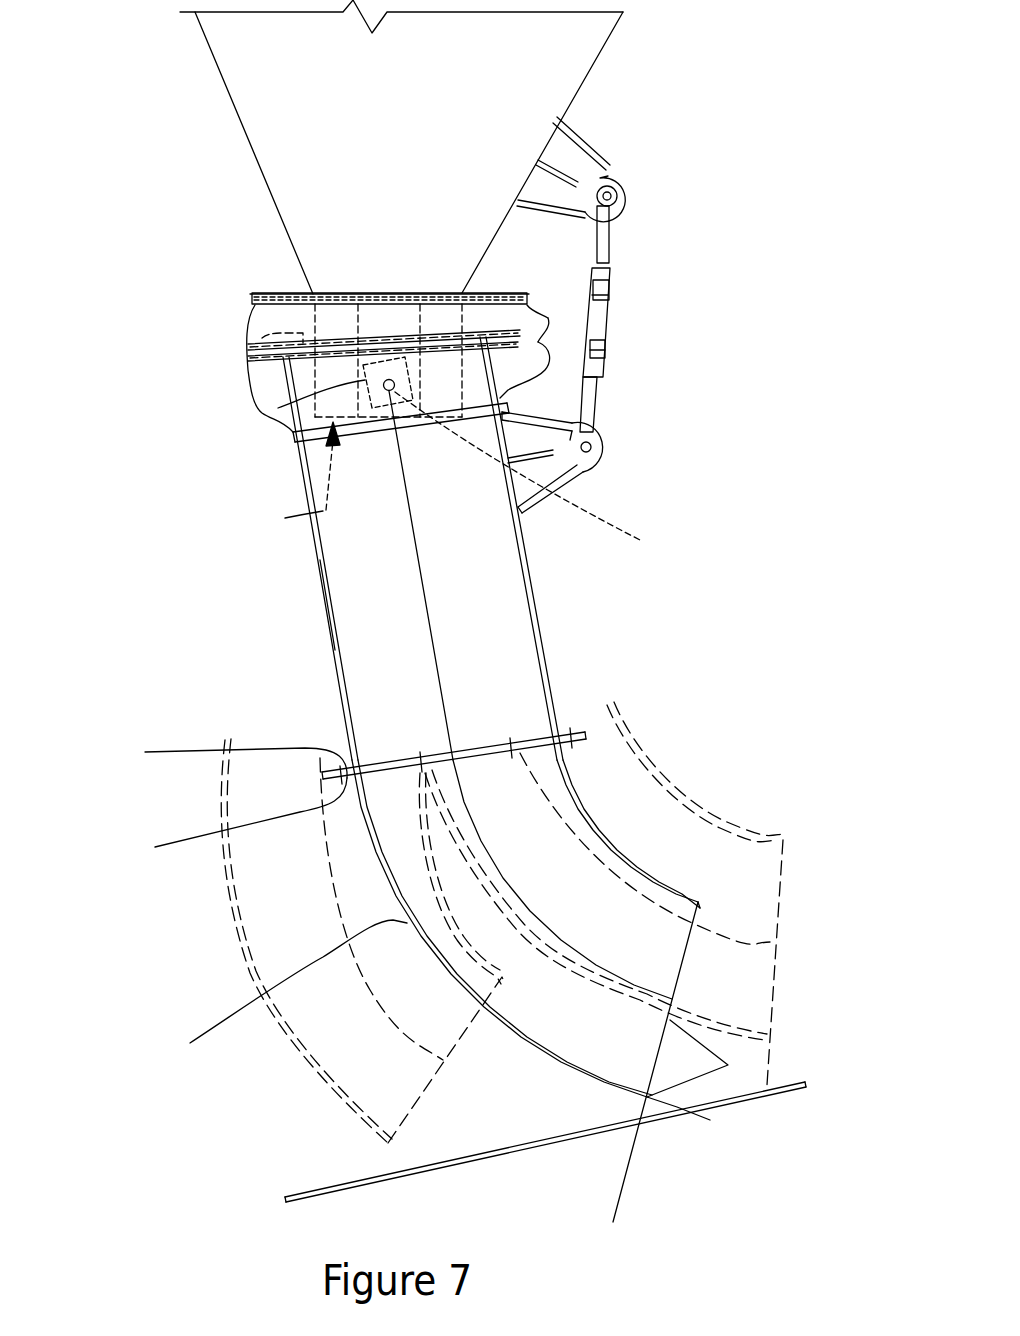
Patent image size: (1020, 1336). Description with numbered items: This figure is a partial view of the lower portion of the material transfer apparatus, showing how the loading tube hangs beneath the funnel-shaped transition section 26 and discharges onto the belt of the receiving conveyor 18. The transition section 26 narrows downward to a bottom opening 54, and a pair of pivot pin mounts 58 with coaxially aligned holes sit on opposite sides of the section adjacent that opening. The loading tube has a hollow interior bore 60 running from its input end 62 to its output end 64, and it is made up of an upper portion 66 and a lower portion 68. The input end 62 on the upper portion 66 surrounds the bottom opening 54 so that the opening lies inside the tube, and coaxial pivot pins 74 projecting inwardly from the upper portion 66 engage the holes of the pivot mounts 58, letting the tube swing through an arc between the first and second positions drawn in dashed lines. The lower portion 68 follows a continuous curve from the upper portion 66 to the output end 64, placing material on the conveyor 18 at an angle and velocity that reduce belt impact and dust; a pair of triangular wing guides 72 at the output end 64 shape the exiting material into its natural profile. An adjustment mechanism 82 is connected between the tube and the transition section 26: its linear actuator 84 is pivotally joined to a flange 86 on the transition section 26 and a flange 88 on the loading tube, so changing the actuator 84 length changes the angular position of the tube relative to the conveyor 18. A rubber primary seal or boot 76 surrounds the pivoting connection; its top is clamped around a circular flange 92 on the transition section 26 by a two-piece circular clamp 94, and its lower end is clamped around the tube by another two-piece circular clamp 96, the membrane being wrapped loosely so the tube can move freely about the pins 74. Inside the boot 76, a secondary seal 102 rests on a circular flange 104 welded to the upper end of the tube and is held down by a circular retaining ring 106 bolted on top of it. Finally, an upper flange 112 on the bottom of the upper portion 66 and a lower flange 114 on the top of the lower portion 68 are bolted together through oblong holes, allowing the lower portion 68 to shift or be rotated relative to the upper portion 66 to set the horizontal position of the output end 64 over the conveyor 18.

The receiving conveyor 18 is at (316, 1192).
The transition section 26 is at (267, 127).
The bottom opening 54 is at (296, 479).
The pivot pin mounts 58 is at (278, 408).
The interior bore 60 is at (508, 740).
The input end 62 is at (246, 338).
The output end 64 is at (675, 1075).
The upper portion 66 is at (323, 597).
The lower portion 68 is at (279, 991).
The wing guides 72 is at (697, 1067).
The pivot pins 74 is at (533, 478).
The primary seal 76 is at (250, 385).
The adjustment mechanism 82 is at (665, 302).
The linear actuator 84 is at (603, 342).
The flange 86 is at (607, 181).
The flange 88 is at (578, 455).
The circular flange 92 is at (252, 300).
The two-piece circular clamp 94 is at (262, 292).
The two-piece circular clamp 96 is at (302, 432).
The secondary seal 102 is at (540, 318).
The circular flange 104 is at (541, 352).
The circular retaining ring 106 is at (527, 300).
The upper flange 112 is at (222, 758).
The lower flange 114 is at (227, 822).